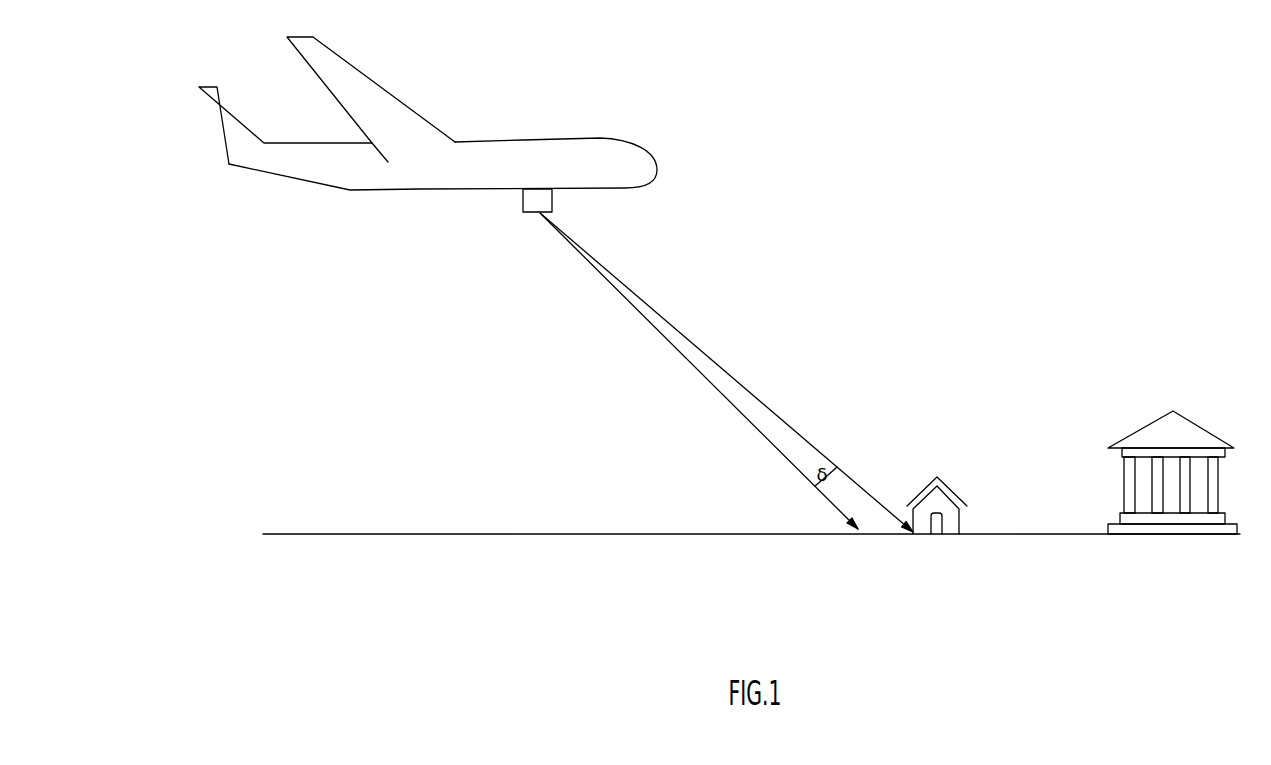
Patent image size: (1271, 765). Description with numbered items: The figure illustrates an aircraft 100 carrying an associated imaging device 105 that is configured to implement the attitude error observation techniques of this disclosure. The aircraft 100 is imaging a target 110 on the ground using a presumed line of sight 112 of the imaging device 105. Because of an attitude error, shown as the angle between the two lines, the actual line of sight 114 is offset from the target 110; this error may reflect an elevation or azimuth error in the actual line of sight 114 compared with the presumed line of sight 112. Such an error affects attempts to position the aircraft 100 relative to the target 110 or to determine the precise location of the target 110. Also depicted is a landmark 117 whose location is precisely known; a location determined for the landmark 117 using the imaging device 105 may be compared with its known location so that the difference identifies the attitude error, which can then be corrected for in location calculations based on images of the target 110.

The aircraft 100 is at (633, 148).
The imaging device 105 is at (522, 202).
The target 110 is at (957, 497).
The presumed line of sight 112 is at (743, 386).
The actual line of sight 114 is at (722, 393).
The landmark 117 is at (1207, 429).